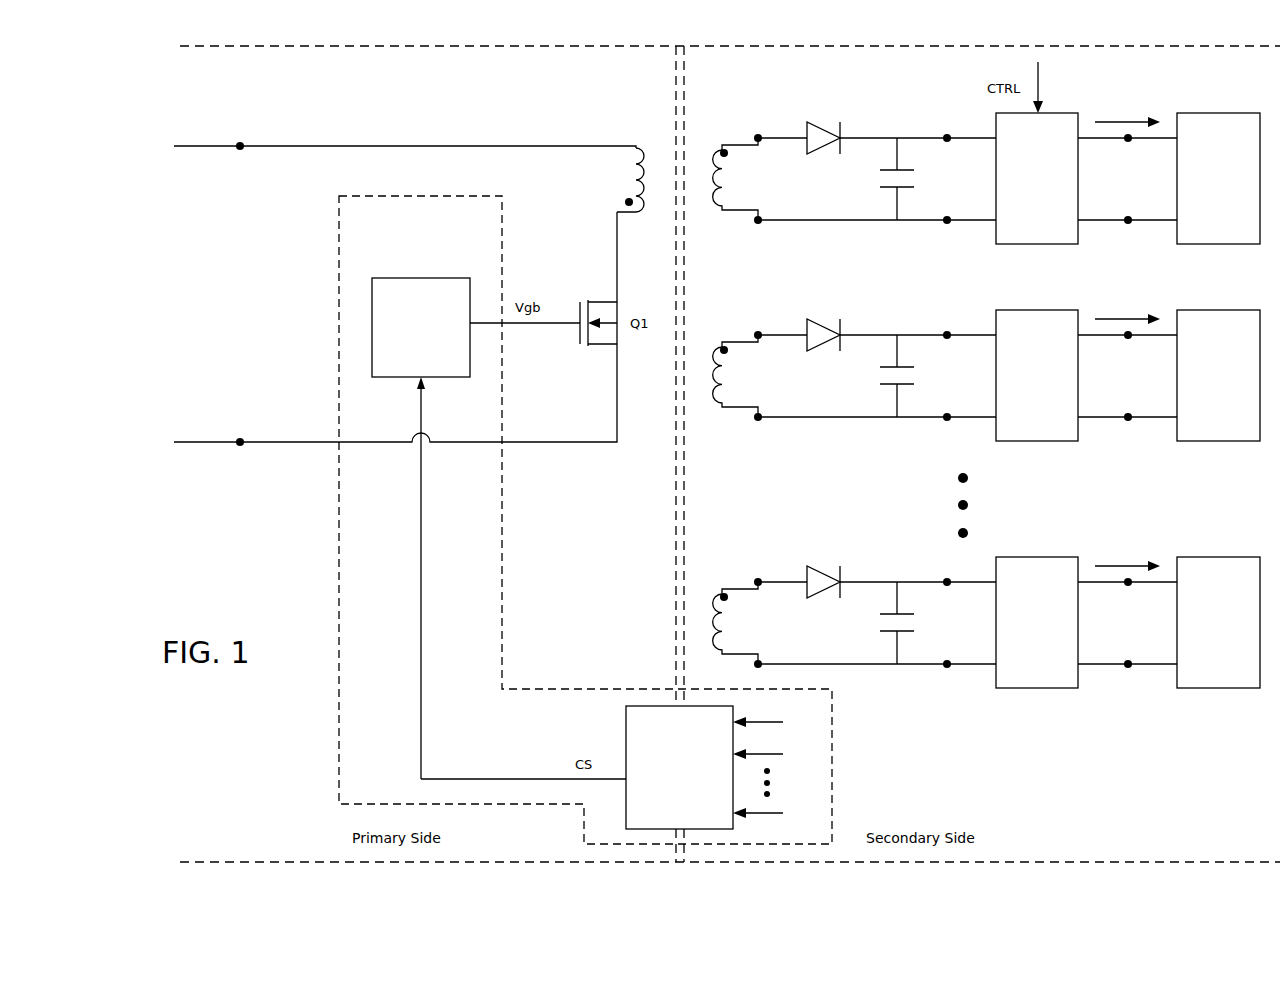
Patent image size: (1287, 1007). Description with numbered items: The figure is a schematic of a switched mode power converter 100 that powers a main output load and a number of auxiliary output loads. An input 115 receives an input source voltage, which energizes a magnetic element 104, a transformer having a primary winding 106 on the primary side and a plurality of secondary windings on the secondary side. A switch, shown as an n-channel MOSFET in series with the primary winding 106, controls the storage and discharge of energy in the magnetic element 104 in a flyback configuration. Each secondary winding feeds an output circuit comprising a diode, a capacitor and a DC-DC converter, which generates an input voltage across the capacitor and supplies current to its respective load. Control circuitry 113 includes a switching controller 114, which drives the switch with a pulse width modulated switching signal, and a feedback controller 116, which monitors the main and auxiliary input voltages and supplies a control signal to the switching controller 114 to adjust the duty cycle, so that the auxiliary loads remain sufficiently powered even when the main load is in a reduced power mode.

The power converter 100 is at (170, 92).
The magnetic element 104 is at (616, 144).
The primary winding 106 is at (643, 152).
The control circuitry 113 is at (585, 520).
The switching controller 114 is at (421, 327).
The input 115 is at (172, 294).
The feedback controller 116 is at (715, 767).